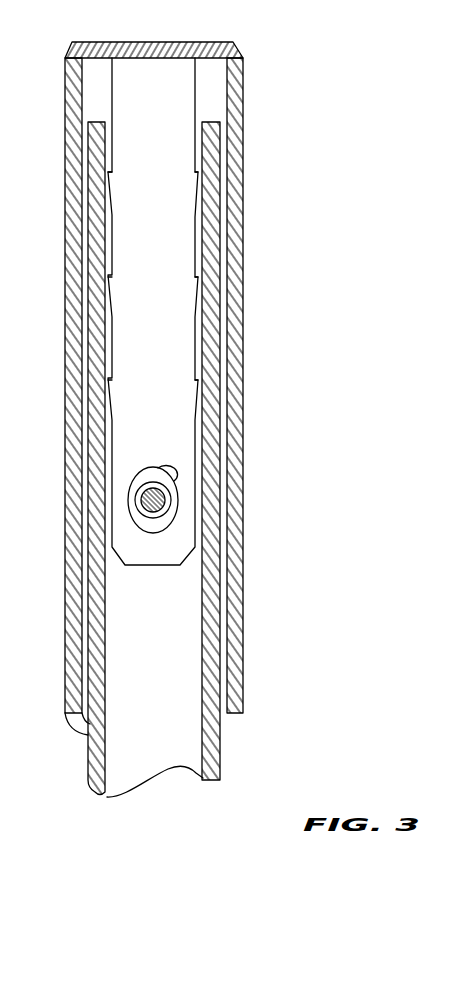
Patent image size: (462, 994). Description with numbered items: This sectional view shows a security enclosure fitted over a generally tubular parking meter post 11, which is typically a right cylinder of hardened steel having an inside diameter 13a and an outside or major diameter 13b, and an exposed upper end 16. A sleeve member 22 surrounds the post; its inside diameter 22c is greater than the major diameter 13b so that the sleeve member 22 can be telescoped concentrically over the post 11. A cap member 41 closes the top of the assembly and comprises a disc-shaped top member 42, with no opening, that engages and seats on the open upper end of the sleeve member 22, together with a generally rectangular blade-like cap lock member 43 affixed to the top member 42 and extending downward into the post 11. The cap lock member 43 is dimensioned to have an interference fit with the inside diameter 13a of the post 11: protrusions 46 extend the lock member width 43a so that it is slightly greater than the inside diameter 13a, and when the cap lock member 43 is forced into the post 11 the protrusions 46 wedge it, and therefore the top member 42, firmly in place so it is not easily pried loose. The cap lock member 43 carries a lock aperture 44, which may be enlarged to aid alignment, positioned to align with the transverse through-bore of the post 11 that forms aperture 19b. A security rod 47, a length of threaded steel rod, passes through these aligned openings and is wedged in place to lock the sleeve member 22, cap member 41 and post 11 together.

The parking meter post 11 is at (88, 210).
The inside diameter 13a is at (203, 783).
The outside diameter 13b is at (220, 783).
The upper end 16 is at (210, 120).
The aperture 19b is at (163, 518).
The sleeve member 22 is at (245, 575).
The inside diameter 22c is at (228, 720).
The cap member 41 is at (122, 32).
The top member 42 is at (167, 41).
The cap lock member 43 is at (165, 248).
The lock member width 43a is at (195, 93).
The lock aperture 44 is at (175, 478).
The protrusions 46 is at (190, 188).
The security rod 47 is at (162, 510).